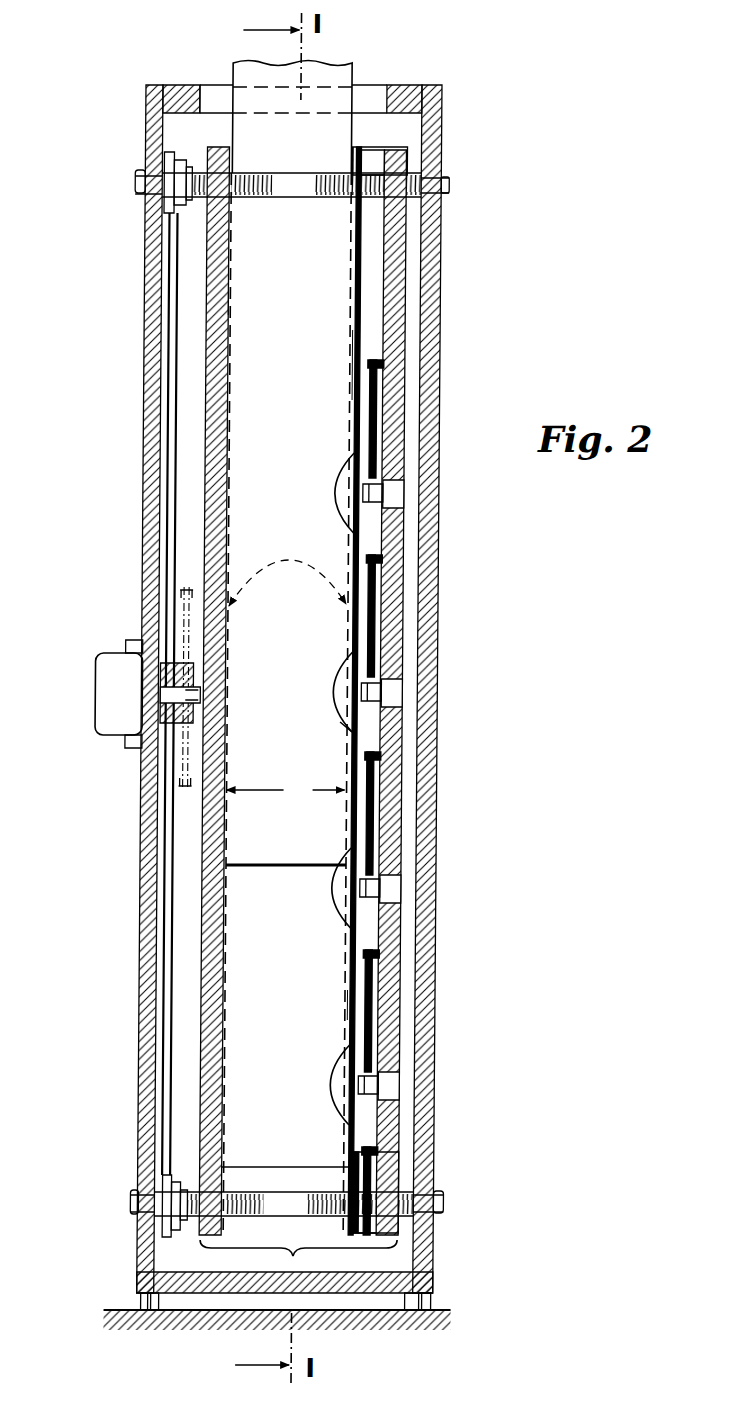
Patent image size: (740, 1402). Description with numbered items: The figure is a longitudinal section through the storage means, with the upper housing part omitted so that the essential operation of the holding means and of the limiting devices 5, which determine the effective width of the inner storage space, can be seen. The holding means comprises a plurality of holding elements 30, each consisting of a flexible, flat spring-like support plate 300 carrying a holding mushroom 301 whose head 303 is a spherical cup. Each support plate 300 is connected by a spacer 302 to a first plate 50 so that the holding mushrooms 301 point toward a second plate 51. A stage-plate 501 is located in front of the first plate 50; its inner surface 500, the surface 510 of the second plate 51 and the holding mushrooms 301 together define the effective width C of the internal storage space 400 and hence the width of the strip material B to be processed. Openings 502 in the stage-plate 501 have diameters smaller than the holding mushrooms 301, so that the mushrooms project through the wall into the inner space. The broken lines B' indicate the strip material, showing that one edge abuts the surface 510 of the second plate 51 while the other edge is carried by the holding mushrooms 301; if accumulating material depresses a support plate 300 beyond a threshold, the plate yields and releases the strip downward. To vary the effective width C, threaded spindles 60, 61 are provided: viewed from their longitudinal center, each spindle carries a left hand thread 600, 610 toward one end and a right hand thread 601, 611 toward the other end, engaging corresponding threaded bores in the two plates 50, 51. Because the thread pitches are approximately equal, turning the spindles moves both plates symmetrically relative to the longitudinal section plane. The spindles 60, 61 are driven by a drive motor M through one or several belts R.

The limiting device 5 is at (302, 1254).
The holding element 30 is at (400, 755).
The first plate 50 is at (398, 268).
The second plate 51 is at (213, 265).
The threaded spindle 60 is at (298, 1203).
The threaded spindle 61 is at (291, 183).
The support plate 300 is at (382, 420).
The holding mushroom 301 is at (347, 490).
The spacer 302 is at (386, 318).
The head 303 is at (354, 718).
The internal storage space 400 is at (272, 391).
The inner surface 500 is at (359, 335).
The stage-plate 501 is at (354, 372).
The opening 502 is at (361, 1002).
The surface 510 is at (234, 298).
The left hand thread 600 is at (376, 1185).
The right hand thread 601 is at (206, 1193).
The left hand thread 610 is at (383, 165).
The right hand thread 611 is at (202, 170).
The strip material B is at (368, 634).
The broken lines B' is at (287, 578).
The effective width C is at (285, 793).
The drive motor M is at (127, 690).
The belt R is at (176, 496).